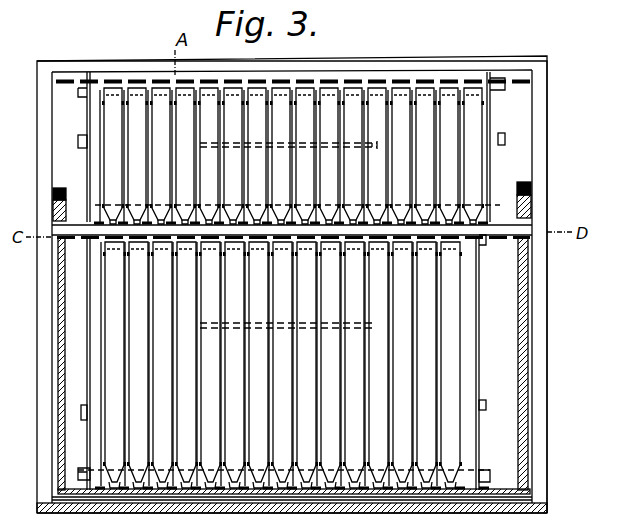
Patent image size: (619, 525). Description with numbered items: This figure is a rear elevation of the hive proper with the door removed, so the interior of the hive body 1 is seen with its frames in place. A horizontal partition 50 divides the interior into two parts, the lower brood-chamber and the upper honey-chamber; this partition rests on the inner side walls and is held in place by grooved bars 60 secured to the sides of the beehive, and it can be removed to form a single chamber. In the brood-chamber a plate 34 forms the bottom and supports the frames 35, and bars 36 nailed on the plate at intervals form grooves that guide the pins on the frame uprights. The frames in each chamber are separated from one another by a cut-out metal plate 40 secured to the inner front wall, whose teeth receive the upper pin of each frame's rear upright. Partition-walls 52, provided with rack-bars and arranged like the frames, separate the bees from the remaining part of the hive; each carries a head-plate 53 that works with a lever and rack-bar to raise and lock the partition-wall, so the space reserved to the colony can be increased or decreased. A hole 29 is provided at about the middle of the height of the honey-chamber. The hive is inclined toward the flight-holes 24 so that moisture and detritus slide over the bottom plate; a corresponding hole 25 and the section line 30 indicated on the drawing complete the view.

The frame 1 is at (44, 131).
The flight-holes 24 is at (80, 467).
The hook 25 is at (486, 475).
The hole 29 is at (360, 143).
The bar 30 is at (293, 229).
The plate 34 is at (112, 513).
The frames 35 is at (289, 288).
The bars 36 is at (279, 372).
The metal plate 40 is at (358, 80).
The horizontal partition 50 is at (532, 233).
The partition-walls 52 is at (90, 120).
The head-plate 53 is at (292, 419).
The grooved bars 60 is at (547, 195).